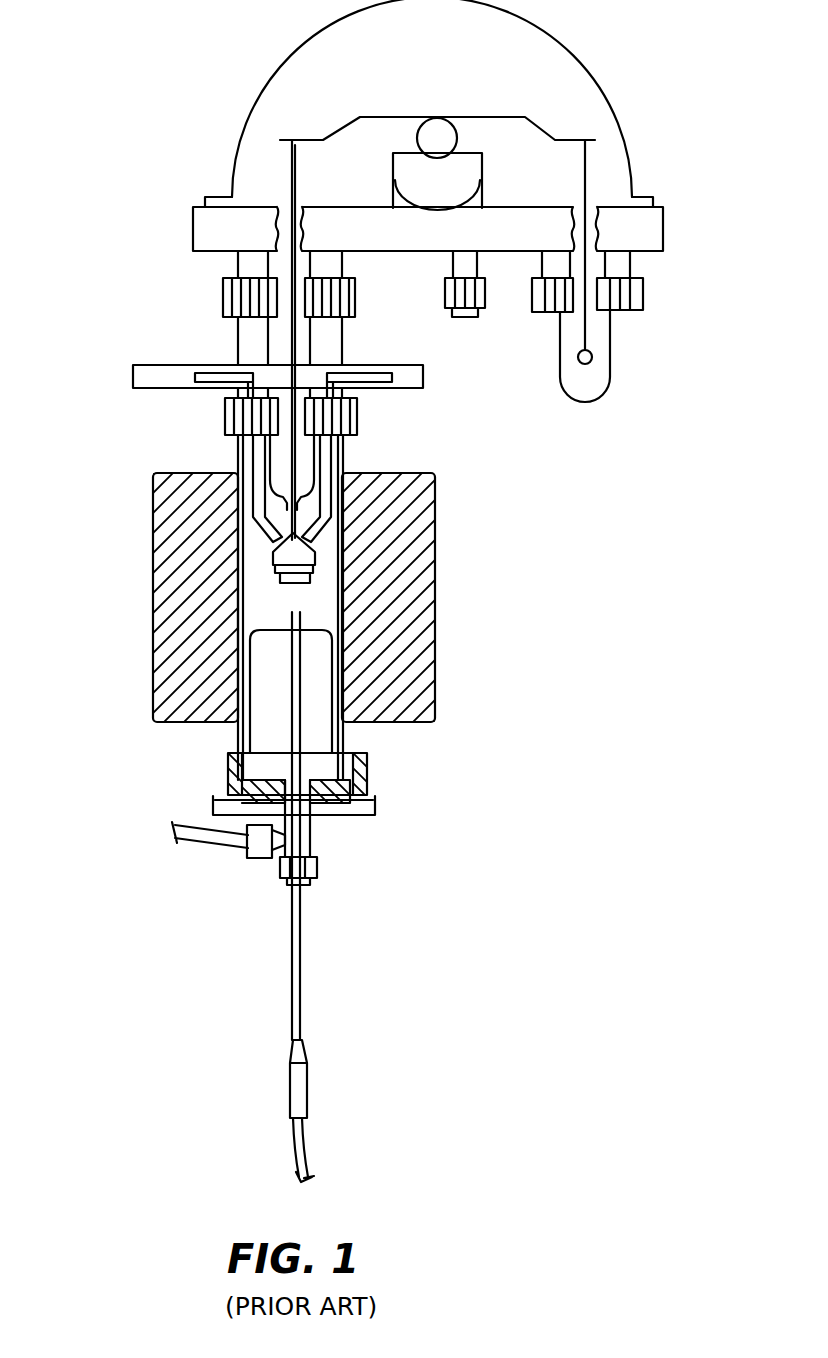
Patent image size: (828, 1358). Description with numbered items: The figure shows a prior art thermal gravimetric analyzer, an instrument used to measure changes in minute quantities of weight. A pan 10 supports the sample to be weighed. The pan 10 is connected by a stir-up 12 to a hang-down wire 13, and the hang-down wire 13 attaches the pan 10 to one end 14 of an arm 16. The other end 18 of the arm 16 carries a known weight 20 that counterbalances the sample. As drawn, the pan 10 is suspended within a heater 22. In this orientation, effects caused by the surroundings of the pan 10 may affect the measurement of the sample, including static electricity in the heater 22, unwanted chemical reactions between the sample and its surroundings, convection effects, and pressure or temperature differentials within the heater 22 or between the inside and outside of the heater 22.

The pan 10 is at (287, 585).
The stir-up 12 is at (315, 547).
The hang-down wire 13 is at (325, 520).
The one end of arm 14 is at (292, 140).
The arm 16 is at (462, 117).
The other end of arm 18 is at (585, 140).
The known weight 20 is at (592, 357).
The heater 22 is at (180, 550).